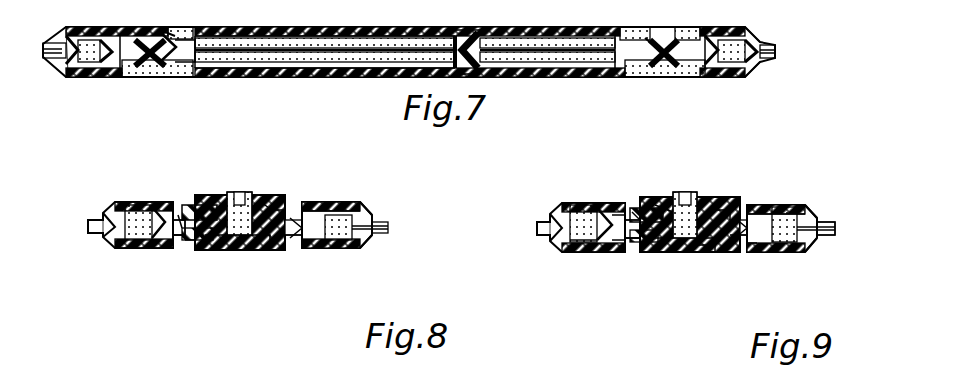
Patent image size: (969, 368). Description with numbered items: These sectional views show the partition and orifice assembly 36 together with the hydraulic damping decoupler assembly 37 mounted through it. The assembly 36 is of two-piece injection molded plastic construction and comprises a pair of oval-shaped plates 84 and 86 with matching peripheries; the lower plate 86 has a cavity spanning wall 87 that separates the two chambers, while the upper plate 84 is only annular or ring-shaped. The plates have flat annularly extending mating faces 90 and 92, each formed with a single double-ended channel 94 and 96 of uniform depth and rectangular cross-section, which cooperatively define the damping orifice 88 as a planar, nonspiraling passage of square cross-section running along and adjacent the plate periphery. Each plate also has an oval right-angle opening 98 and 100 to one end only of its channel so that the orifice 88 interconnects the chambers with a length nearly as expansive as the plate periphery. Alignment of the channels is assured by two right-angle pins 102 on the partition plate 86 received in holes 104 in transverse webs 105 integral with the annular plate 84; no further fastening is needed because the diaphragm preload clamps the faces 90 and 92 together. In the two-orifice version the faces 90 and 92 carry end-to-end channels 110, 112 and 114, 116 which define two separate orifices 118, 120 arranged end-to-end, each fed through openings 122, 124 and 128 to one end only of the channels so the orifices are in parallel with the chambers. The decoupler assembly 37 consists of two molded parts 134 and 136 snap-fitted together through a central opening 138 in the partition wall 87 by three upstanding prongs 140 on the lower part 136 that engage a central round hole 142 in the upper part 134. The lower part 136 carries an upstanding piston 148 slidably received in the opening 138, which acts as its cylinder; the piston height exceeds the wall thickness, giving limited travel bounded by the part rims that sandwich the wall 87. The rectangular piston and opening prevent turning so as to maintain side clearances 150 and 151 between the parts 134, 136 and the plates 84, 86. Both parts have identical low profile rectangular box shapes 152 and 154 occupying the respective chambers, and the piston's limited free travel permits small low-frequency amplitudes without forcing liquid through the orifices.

In FIG. 7, the partition and orifice assembly 36 is at (64, 30).
In FIG. 8, the partition and orifice assembly 36 is at (97, 209).
In FIG. 9, the partition and orifice assembly 36 is at (547, 212).
In FIG. 8, the hydraulic damping decoupler assembly 37 is at (222, 249).
In FIG. 9, the hydraulic damping decoupler assembly 37 is at (650, 253).
In FIG. 7, the upper plate 84 is at (773, 50).
In FIG. 8, the upper plate 84 is at (390, 225).
In FIG. 9, the upper plate 84 is at (837, 227).
In FIG. 7, the lower plate 86 is at (757, 57).
In FIG. 8, the lower plate 86 is at (383, 233).
In FIG. 9, the lower plate 86 is at (838, 235).
In FIG. 7, the cavity spanning wall 87 is at (187, 55).
In FIG. 8, the cavity spanning wall 87 is at (187, 205).
In FIG. 9, the cavity spanning wall 87 is at (617, 240).
In FIG. 7, the damping orifice 88 is at (74, 77).
In FIG. 8, the damping orifice 88 is at (122, 232).
In FIG. 7, the mating face 90 is at (293, 50).
In FIG. 8, the mating face 90 is at (157, 207).
In FIG. 9, the mating face 90 is at (605, 208).
In FIG. 7, the mating face 92 is at (445, 30).
In FIG. 8, the mating face 92 is at (172, 240).
In FIG. 9, the mating face 92 is at (612, 217).
In FIG. 7, the channel 94 is at (313, 40).
In FIG. 8, the channel 94 is at (367, 212).
In FIG. 7, the channel 96 is at (378, 58).
In FIG. 8, the channel 96 is at (343, 237).
In FIG. 7, the opening 98 is at (375, 30).
In FIG. 8, the opening 98 is at (147, 202).
In FIG. 7, the opening 100 is at (558, 67).
In FIG. 8, the opening 100 is at (140, 240).
In FIG. 7, the right-angle pin 102 is at (167, 27).
In FIG. 7, the hole 104 is at (150, 63).
In FIG. 7, the transverse web 105 is at (123, 63).
In FIG. 9, the channel 110 is at (588, 205).
In FIG. 9, the channel 112 is at (815, 213).
In FIG. 9, the channel 114 is at (575, 243).
In FIG. 9, the channel 116 is at (788, 247).
In FIG. 9, the orifice 118 is at (563, 233).
In FIG. 9, the orifice 120 is at (813, 242).
In FIG. 9, the opening 122 is at (573, 205).
In FIG. 9, the opening 124 is at (787, 208).
In FIG. 9, the opening 128 is at (583, 253).
In FIG. 8, the upper decoupler part 134 is at (280, 203).
In FIG. 9, the upper decoupler part 134 is at (720, 208).
In FIG. 8, the lower decoupler part 136 is at (263, 250).
In FIG. 9, the lower decoupler part 136 is at (685, 250).
In FIG. 8, the central opening 138 is at (203, 205).
In FIG. 9, the central opening 138 is at (653, 240).
In FIG. 8, the prong 140 is at (228, 200).
In FIG. 9, the prong 140 is at (707, 192).
In FIG. 8, the central round hole 142 is at (208, 250).
In FIG. 9, the central round hole 142 is at (670, 250).
In FIG. 8, the piston 148 is at (300, 247).
In FIG. 9, the piston 148 is at (740, 245).
In FIG. 8, the side clearance 150 is at (180, 203).
In FIG. 9, the side clearance 150 is at (638, 205).
In FIG. 8, the side clearance 151 is at (180, 233).
In FIG. 9, the side clearance 151 is at (618, 248).
In FIG. 8, the rectangular box shape 152 is at (272, 207).
In FIG. 9, the rectangular box shape 152 is at (653, 207).
In FIG. 8, the rectangular box shape 154 is at (192, 243).
In FIG. 9, the rectangular box shape 154 is at (700, 252).